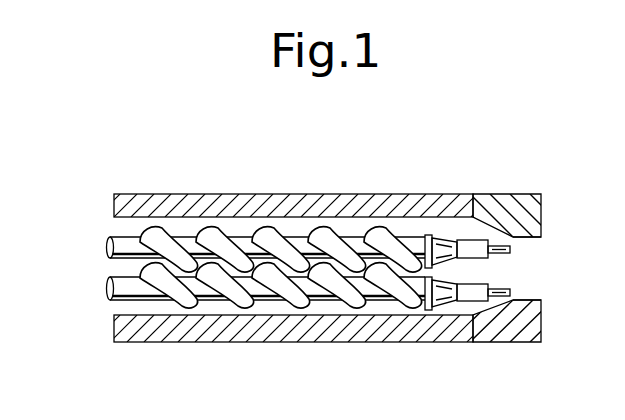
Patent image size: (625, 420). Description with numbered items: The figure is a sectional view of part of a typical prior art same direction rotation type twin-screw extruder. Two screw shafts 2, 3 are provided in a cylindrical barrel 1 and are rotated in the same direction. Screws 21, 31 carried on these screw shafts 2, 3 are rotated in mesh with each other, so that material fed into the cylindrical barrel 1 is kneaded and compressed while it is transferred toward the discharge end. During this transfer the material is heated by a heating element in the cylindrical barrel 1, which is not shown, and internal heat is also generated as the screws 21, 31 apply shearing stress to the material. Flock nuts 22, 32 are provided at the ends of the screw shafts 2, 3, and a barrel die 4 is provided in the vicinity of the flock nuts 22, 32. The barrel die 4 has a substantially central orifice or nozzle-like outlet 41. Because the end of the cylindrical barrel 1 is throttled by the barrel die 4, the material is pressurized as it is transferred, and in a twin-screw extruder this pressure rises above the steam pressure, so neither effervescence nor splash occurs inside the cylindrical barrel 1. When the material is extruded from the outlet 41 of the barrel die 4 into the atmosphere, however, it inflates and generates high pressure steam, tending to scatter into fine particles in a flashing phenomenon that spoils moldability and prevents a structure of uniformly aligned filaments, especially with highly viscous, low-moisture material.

The cylindrical barrel 1 is at (204, 205).
The screw shaft 2 is at (112, 240).
The screw shaft 3 is at (112, 287).
The screw 21 is at (323, 230).
The flock nut 22 is at (445, 243).
The screw 31 is at (315, 303).
The flock nut 32 is at (437, 303).
The barrel die 4 is at (512, 202).
The outlet 41 is at (518, 267).